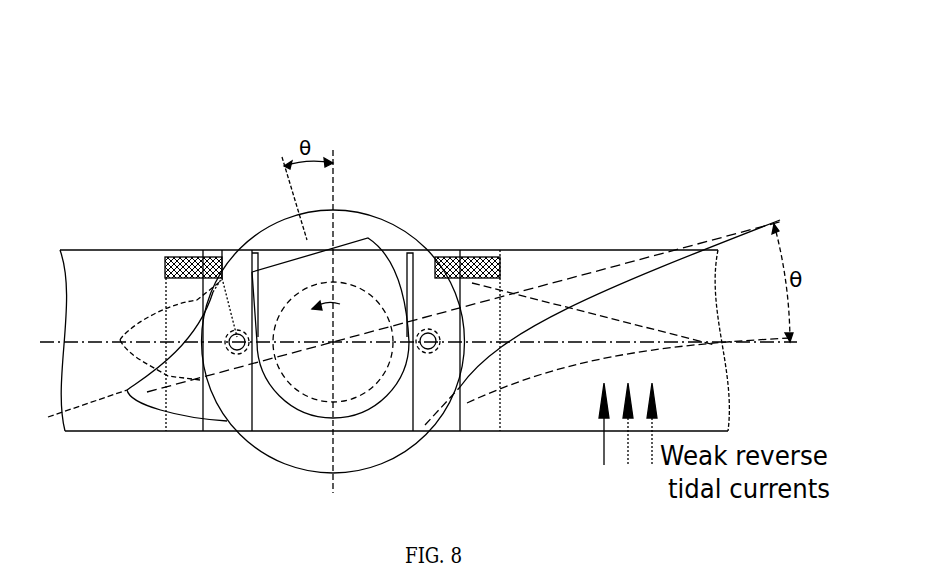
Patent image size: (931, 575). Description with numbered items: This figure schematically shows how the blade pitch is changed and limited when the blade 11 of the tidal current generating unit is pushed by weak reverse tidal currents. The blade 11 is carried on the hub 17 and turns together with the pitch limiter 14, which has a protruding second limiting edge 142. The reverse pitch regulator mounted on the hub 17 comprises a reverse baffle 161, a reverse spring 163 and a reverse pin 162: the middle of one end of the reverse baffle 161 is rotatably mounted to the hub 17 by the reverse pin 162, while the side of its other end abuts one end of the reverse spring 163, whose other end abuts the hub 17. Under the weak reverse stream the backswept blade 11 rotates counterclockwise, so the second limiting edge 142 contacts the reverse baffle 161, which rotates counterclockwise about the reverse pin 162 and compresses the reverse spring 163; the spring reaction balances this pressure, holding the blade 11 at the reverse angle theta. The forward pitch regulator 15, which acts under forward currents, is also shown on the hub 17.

The blade 11 is at (147, 332).
The pitch limiter 14 is at (363, 273).
The second limiting edge 142 is at (255, 270).
The forward pitch regulator 15 is at (475, 252).
The reverse baffle 161 is at (235, 262).
The reverse pin 162 is at (222, 278).
The reverse spring 163 is at (170, 257).
The hub 17 is at (642, 293).